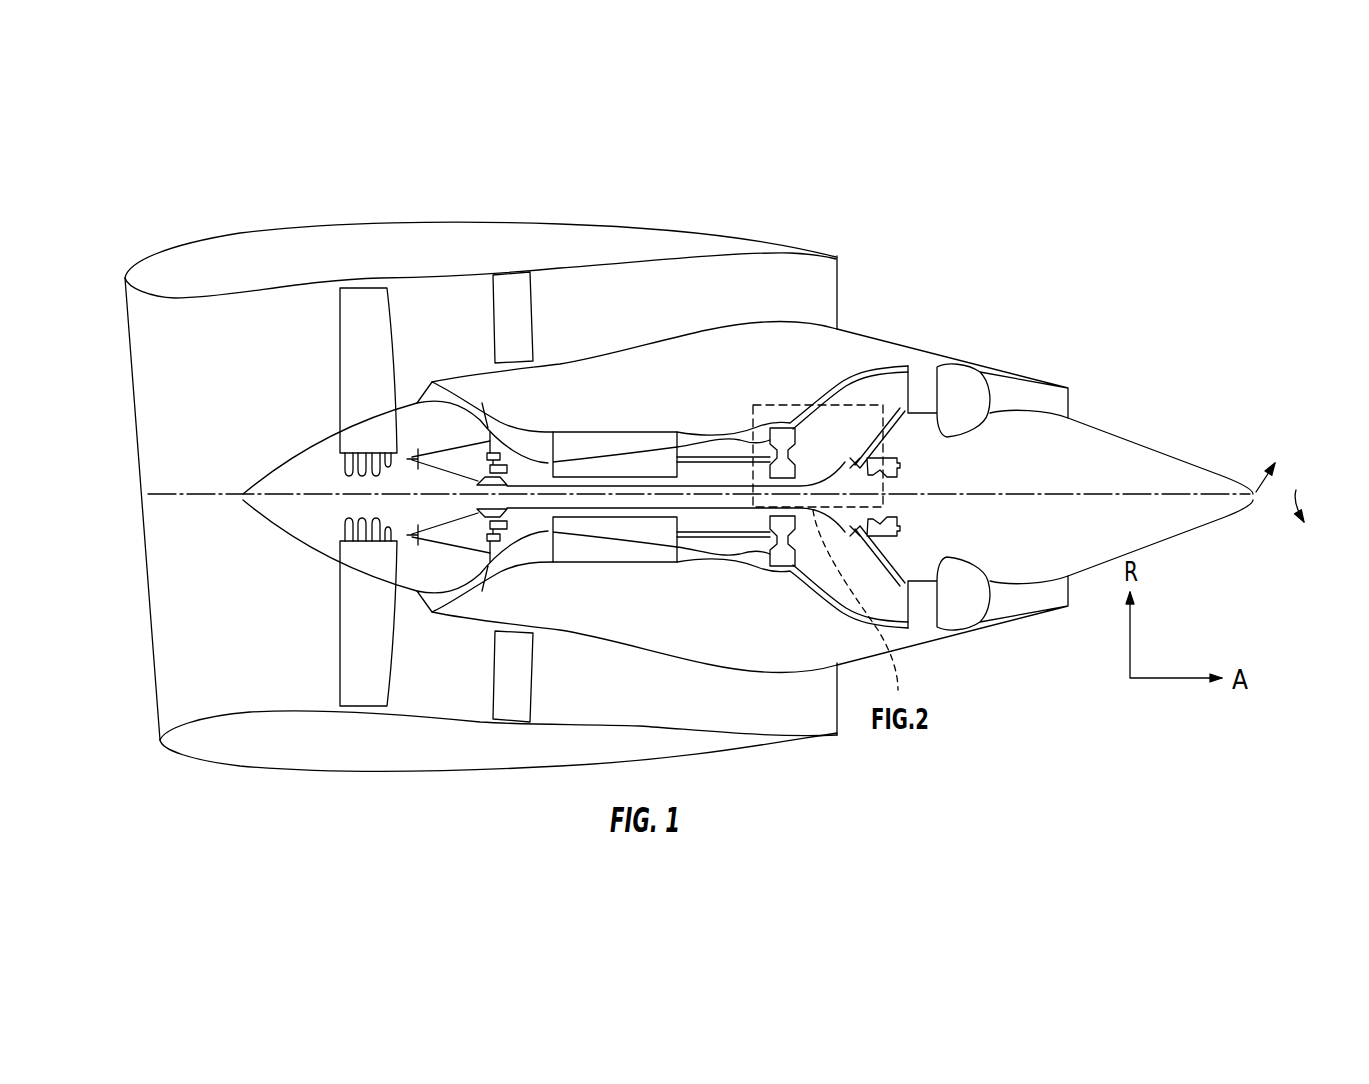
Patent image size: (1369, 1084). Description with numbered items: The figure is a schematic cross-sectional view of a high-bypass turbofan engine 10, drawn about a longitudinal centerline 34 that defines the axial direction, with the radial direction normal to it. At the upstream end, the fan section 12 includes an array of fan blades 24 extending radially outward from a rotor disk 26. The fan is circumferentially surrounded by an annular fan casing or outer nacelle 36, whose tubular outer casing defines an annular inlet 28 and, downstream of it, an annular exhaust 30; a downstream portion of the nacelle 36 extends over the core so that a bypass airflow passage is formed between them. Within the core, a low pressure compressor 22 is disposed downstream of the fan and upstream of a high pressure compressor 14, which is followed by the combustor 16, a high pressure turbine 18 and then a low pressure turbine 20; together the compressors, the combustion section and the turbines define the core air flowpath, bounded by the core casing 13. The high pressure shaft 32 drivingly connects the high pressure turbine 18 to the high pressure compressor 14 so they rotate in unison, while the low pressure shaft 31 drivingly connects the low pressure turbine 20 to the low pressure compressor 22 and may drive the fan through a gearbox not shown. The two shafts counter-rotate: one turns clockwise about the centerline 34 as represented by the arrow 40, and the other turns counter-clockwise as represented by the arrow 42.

The turbofan engine 10 is at (760, 200).
The fan section 12 is at (367, 632).
The core engine casing 13 is at (683, 350).
The high pressure compressor 14 is at (575, 440).
The combustor 16 is at (740, 440).
The high pressure turbine 18 is at (780, 566).
The low pressure turbine 20 is at (873, 382).
The low pressure compressor 22 is at (460, 398).
The fan blades 24 is at (347, 355).
The rotor disk 26 is at (363, 563).
The annular inlet 28 is at (108, 332).
The annular exhaust 30 is at (868, 274).
The low pressure shaft 31 is at (800, 483).
The high pressure shaft 32 is at (703, 458).
The longitudinal centerline 34 is at (1017, 493).
The outer nacelle 36 is at (428, 230).
The clockwise rotation arrow 40 is at (1270, 518).
The counter-clockwise rotation arrow 42 is at (1296, 490).